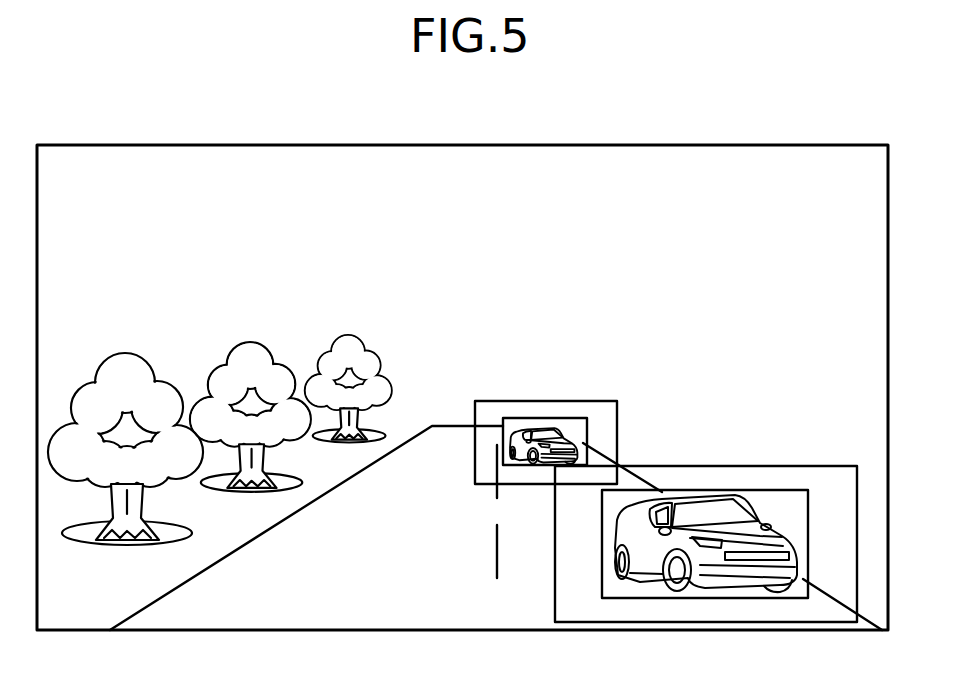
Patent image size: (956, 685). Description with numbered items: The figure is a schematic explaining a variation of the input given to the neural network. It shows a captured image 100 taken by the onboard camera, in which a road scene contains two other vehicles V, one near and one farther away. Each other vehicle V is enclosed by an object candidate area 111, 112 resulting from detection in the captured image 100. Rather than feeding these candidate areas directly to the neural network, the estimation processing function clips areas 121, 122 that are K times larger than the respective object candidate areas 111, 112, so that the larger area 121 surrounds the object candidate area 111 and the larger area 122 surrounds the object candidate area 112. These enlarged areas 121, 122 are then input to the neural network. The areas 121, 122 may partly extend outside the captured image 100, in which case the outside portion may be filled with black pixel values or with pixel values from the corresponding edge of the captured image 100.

The captured image 100 is at (829, 145).
The object candidate area 111 is at (707, 490).
The object candidate area 112 is at (548, 418).
The area 121 is at (835, 466).
The area 122 is at (498, 401).
The other vehicle V is at (565, 440).